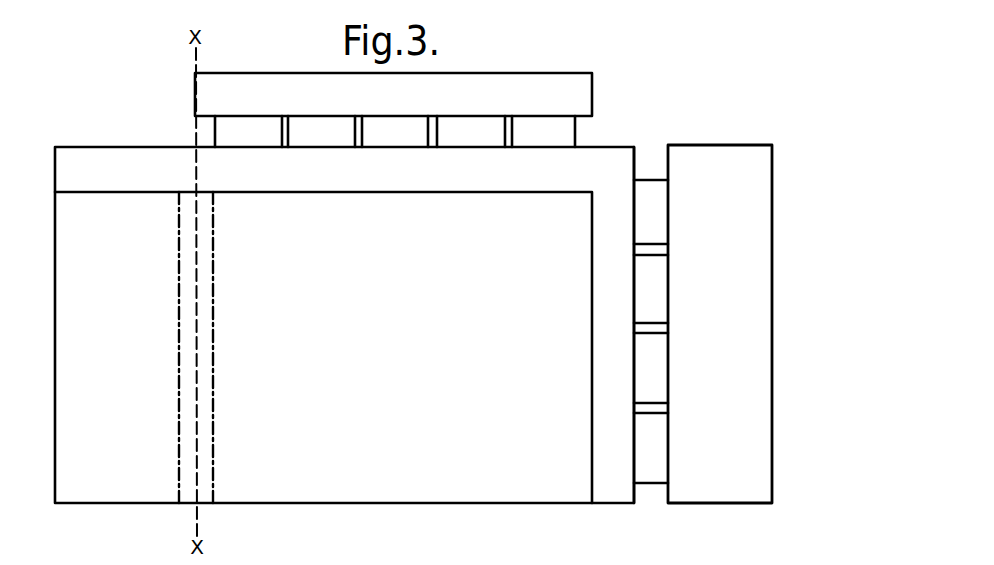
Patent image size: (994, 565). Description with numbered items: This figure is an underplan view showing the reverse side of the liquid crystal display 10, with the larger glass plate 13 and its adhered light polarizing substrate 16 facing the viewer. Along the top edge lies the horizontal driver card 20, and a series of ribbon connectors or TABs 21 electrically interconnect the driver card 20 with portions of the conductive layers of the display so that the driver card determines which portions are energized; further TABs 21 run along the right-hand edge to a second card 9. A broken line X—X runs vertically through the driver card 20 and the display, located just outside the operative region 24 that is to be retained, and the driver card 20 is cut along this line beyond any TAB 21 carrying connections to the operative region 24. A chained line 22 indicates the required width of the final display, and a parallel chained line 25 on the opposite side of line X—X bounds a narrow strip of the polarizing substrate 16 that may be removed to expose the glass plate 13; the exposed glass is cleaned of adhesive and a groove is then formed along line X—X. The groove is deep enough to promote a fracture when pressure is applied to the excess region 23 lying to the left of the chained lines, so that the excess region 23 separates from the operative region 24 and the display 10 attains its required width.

The liquid crystal display 10 is at (134, 101).
The circuit board / connector block 9 is at (740, 162).
The glass plate 13 is at (615, 165).
The light polarizing substrate 16 is at (517, 480).
The horizontal driver card 20 is at (525, 90).
The ribbon connectors or TABs 21 is at (250, 135).
The chained line 22 is at (214, 400).
The excess region 23 is at (130, 321).
The operative region 24 is at (399, 321).
The chained line 25 is at (178, 400).